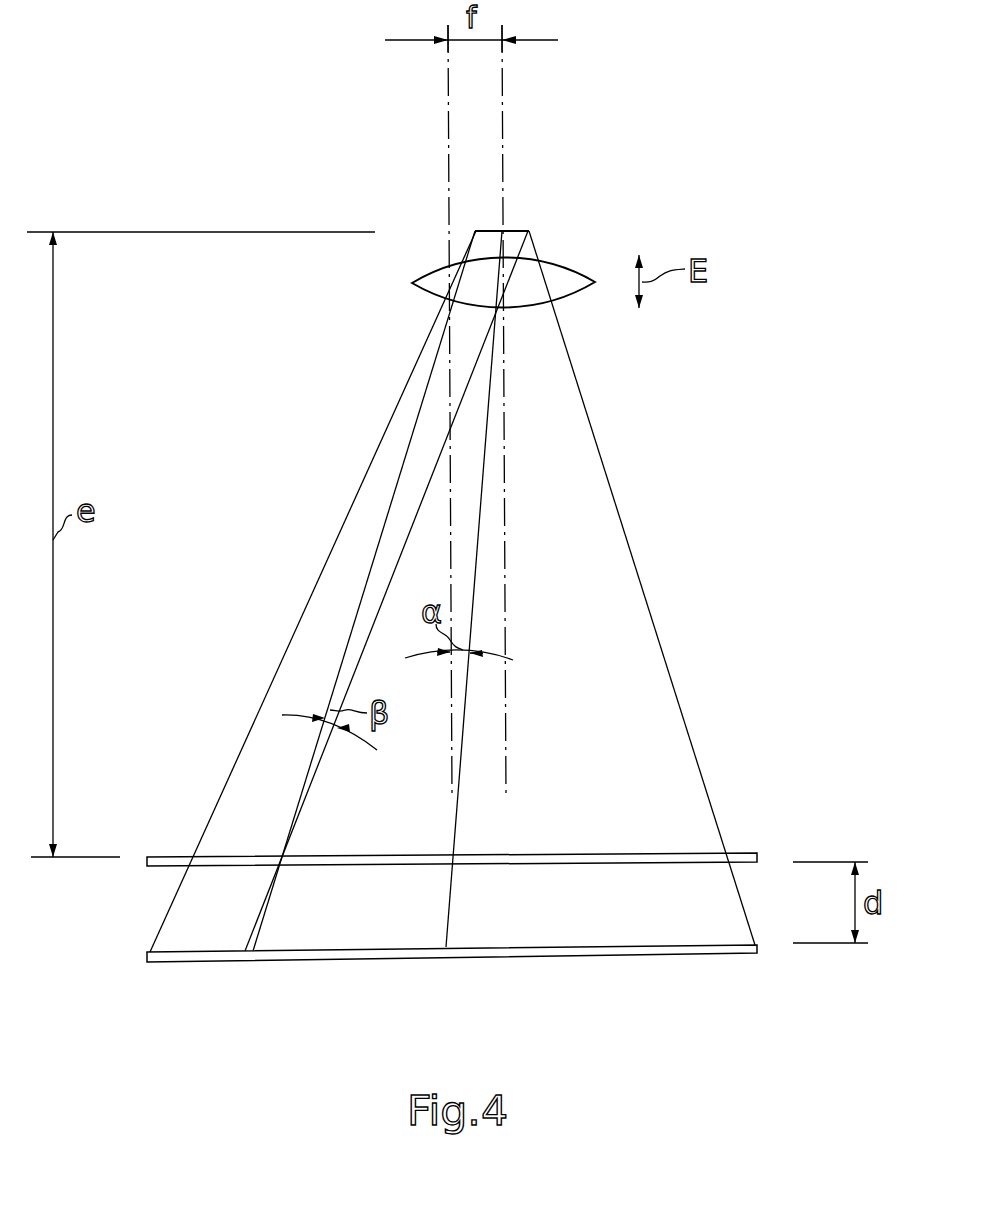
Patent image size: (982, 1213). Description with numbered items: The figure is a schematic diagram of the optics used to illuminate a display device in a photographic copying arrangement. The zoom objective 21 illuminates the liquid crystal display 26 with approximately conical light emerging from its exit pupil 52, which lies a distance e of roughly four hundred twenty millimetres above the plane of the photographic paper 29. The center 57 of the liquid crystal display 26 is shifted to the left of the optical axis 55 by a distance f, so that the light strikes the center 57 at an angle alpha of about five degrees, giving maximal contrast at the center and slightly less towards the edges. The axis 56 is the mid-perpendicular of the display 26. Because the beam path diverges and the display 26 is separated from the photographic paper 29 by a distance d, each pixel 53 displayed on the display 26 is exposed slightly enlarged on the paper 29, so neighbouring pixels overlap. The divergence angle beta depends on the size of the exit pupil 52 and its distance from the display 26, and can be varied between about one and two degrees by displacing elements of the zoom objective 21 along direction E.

The zoom objective 21 is at (567, 275).
The liquid crystal display 26 is at (702, 862).
The photographic paper 29 is at (422, 953).
The exit pupil 52 is at (513, 231).
The pixel 53 is at (282, 863).
The optical axis 55 is at (504, 96).
The axis 56 is at (448, 106).
The center of the liquid crystal display 57 is at (452, 860).